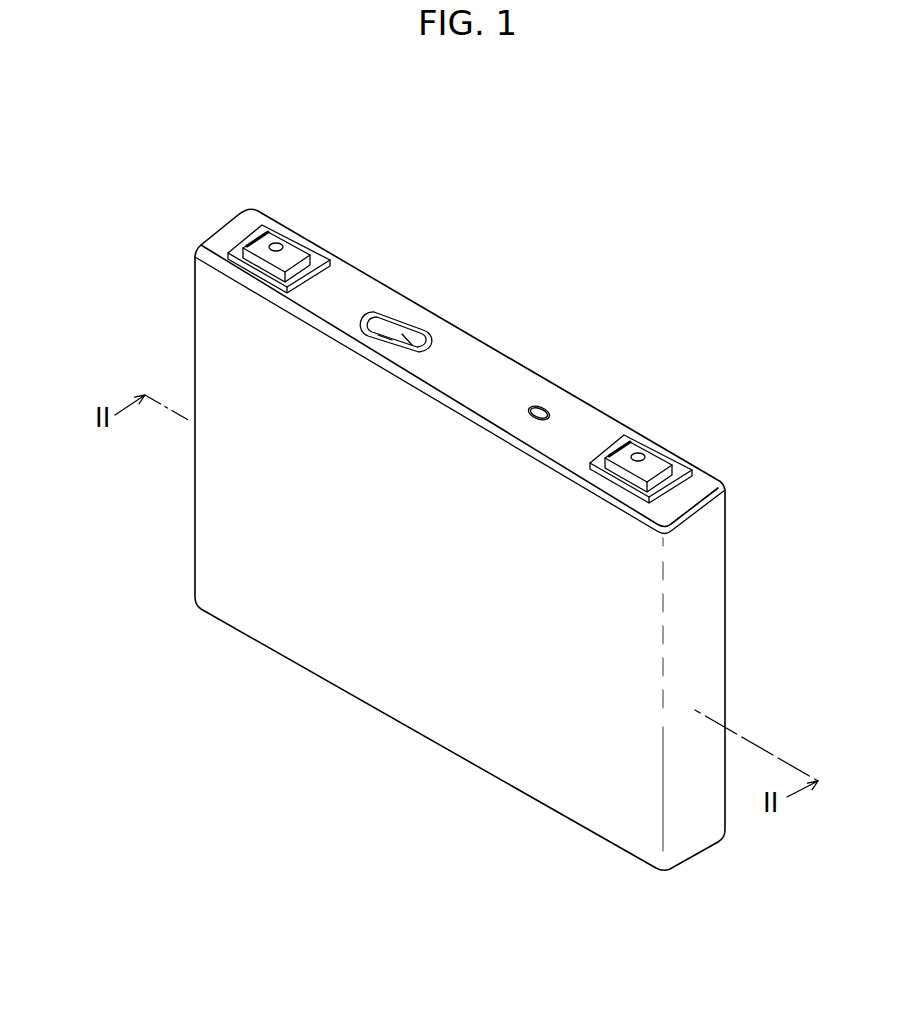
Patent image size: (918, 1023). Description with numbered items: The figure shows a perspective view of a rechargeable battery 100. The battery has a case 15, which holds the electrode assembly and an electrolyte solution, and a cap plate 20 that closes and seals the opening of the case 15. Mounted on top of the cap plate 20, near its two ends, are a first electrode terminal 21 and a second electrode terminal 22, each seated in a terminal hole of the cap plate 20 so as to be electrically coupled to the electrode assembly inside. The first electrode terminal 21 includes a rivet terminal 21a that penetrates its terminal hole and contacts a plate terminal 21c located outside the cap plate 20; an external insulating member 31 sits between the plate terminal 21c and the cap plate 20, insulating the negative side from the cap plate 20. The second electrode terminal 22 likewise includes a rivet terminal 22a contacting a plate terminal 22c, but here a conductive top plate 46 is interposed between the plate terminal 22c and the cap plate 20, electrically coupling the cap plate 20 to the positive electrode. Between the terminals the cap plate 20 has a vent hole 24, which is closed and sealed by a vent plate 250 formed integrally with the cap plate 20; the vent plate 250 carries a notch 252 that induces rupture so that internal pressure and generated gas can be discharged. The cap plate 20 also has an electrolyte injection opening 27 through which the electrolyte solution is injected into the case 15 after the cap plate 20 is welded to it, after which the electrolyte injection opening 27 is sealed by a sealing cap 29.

The rechargeable battery 100 is at (541, 112).
The case 15 is at (395, 713).
The cap plate 20 is at (491, 361).
The first electrode terminal 21 is at (310, 214).
The rivet terminal 21a is at (279, 245).
The plate terminal 21c is at (296, 251).
The external insulating member 31 is at (243, 252).
The second electrode terminal 22 is at (675, 412).
The rivet terminal 22a is at (642, 455).
The plate terminal 22c is at (660, 463).
The conductive top plate 46 is at (690, 464).
The vent hole 24 is at (410, 322).
The vent plate 250 is at (422, 331).
The notch 252 is at (387, 333).
The electrolyte injection opening 27 is at (538, 406).
The sealing cap 29 is at (546, 411).